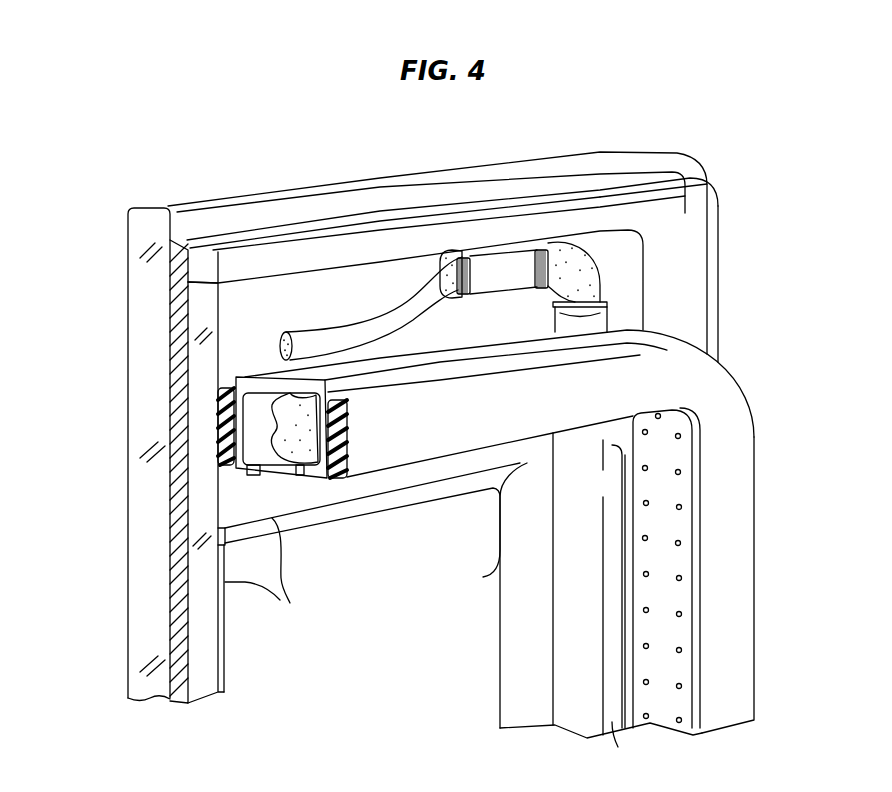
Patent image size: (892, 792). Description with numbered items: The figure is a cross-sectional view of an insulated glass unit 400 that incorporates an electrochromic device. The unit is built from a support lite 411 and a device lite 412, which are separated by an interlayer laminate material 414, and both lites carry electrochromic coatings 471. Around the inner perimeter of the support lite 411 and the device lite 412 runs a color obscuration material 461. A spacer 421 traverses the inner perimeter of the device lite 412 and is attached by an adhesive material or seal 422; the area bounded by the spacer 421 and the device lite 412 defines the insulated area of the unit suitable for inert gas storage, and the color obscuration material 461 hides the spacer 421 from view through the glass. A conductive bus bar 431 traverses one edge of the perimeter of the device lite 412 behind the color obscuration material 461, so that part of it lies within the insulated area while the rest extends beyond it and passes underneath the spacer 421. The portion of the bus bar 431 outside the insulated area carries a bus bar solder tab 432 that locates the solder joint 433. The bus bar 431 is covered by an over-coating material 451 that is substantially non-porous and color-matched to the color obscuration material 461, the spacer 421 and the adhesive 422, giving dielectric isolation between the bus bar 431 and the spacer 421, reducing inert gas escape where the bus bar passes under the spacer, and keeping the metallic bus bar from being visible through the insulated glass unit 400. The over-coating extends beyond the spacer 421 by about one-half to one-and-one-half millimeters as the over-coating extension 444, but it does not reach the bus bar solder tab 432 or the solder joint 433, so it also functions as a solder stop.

The insulated glass unit 400 is at (233, 116).
The support lite 411 is at (152, 232).
The device lite 412 is at (230, 265).
The interlayer laminate material 414 is at (187, 243).
The spacer 421 is at (263, 378).
The adhesive material or seal 422 is at (680, 385).
The conductive bus bar 431 is at (570, 263).
The bus bar solder tab 432 is at (515, 248).
The solder joint 433 is at (478, 265).
The over-coating extension beyond the spacer 444 is at (610, 300).
The over-coating material 451 is at (553, 690).
The color obscuration material 461 is at (172, 505).
The electrochromic coatings 471 is at (432, 617).